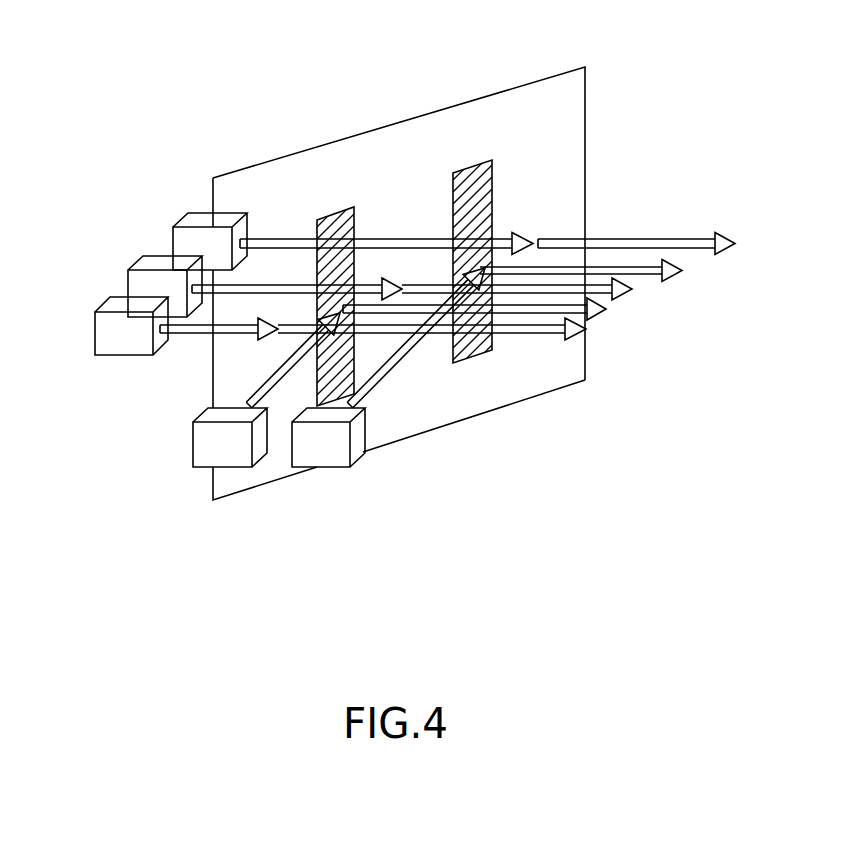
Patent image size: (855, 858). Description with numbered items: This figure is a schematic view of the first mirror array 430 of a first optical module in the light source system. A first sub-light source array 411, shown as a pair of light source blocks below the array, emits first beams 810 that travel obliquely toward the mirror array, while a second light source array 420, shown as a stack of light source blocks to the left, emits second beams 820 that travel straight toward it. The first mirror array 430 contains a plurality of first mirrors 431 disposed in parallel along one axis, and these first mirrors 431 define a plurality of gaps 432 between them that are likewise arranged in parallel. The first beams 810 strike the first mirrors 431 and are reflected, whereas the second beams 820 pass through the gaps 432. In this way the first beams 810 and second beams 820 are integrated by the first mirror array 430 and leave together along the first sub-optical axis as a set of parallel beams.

The first sub-light source array 411 is at (347, 489).
The second light source array 420 is at (188, 197).
The first mirror array 430 is at (471, 81).
The first mirror 431 is at (322, 220).
The gap 432 is at (415, 215).
The first beam 810 is at (597, 308).
The second beam 820 is at (658, 240).